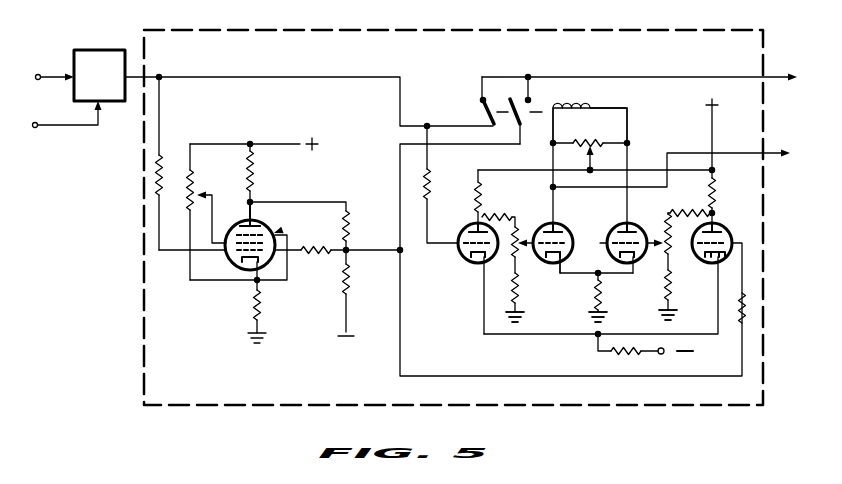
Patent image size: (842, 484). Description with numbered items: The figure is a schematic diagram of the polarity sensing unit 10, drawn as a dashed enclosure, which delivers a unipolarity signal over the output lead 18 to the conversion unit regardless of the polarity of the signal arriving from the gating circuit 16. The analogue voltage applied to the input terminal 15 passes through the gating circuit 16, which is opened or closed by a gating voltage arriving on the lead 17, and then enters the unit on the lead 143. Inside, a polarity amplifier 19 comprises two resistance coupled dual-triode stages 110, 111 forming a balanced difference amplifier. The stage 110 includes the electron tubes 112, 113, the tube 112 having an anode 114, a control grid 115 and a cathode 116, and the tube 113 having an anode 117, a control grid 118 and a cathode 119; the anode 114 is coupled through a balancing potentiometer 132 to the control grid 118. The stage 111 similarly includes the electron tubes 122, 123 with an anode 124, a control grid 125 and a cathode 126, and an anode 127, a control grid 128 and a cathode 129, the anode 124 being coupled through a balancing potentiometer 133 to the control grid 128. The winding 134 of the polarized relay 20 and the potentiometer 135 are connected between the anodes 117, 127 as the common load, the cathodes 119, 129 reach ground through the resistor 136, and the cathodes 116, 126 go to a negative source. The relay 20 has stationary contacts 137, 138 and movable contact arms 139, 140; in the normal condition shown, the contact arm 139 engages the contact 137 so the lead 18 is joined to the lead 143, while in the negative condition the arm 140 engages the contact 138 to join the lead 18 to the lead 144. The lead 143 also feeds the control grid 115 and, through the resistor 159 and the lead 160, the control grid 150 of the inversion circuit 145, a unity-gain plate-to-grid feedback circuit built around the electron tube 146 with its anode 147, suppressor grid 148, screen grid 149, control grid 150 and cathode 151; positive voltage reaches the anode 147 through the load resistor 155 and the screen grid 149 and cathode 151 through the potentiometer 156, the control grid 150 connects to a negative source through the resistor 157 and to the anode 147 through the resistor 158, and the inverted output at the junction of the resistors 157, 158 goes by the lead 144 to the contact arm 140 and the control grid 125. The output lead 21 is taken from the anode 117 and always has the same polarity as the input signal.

The polarity sensing unit 10 is at (421, 27).
The input terminal 15 is at (44, 72).
The gating circuit 16 is at (110, 90).
The lead 17 is at (34, 127).
The output lead 18 is at (778, 74).
The polarity amplifier 19 is at (578, 319).
The polarized relay 20 is at (548, 139).
The output lead 21 is at (778, 150).
The dual-triode stage 110 is at (525, 199).
The dual-triode stage 111 is at (706, 201).
The electron tube 112 is at (474, 218).
The electron tube 113 is at (558, 224).
The anode 114 is at (466, 230).
The control grid 115 is at (460, 246).
The cathode 116 is at (476, 262).
The anode 117 is at (565, 230).
The control grid 118 is at (571, 255).
The cathode 119 is at (555, 272).
The electron tube 122 is at (723, 225).
The electron tube 123 is at (664, 214).
The anode 124 is at (722, 235).
The control grid 125 is at (703, 250).
The cathode 126 is at (717, 270).
The anode 127 is at (627, 220).
The control grid 128 is at (607, 243).
The cathode 129 is at (632, 260).
The balancing potentiometer 132 is at (521, 226).
The balancing potentiometer 133 is at (662, 264).
The winding 134 is at (582, 106).
The potentiometer 135 is at (583, 152).
The resistor 136 is at (601, 285).
The stationary contact 137 is at (480, 103).
The stationary contact 138 is at (531, 101).
The movable contact arm 139 is at (496, 114).
The movable contact arm 140 is at (517, 128).
The lead 143 is at (258, 78).
The lead 144 is at (363, 262).
The inversion circuit 145 is at (256, 131).
The electron tube 146 is at (277, 231).
The anode 147 is at (259, 224).
The suppressor grid 148 is at (240, 212).
The screen grid 149 is at (282, 247).
The control grid 150 is at (232, 272).
The cathode 151 is at (251, 284).
The load resistor 155 is at (254, 178).
The potentiometer 156 is at (200, 176).
The resistor 157 is at (312, 262).
The resistor 158 is at (348, 226).
The resistor 159 is at (155, 180).
The lead 160 is at (162, 113).